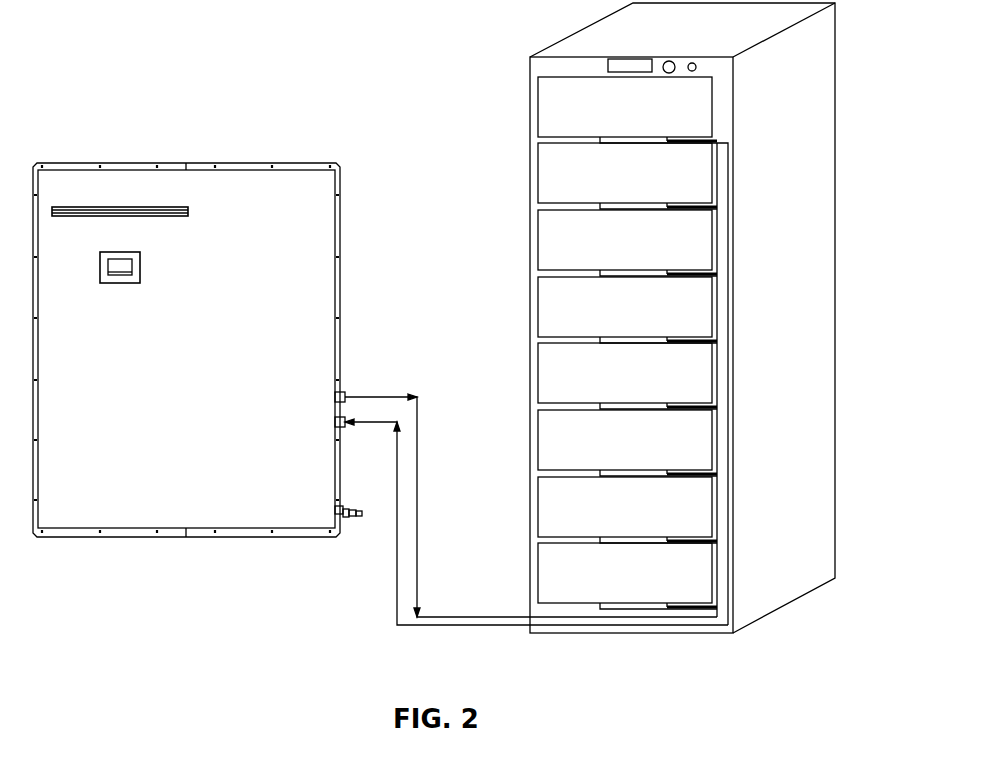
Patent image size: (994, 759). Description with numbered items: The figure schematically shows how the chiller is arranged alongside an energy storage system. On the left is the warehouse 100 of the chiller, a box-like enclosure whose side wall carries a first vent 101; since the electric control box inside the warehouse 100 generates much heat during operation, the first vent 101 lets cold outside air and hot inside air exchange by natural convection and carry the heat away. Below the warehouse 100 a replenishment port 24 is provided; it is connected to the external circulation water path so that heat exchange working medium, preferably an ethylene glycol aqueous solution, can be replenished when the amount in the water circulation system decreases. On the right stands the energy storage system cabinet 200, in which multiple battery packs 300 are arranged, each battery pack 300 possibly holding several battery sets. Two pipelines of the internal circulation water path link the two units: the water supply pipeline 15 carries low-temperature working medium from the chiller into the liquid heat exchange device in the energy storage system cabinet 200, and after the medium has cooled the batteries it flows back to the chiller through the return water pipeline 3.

The warehouse 100 is at (248, 173).
The first vent 101 is at (133, 205).
The energy storage system cabinet 200 is at (581, 46).
The battery pack 300 is at (550, 120).
The water supply pipeline 15 is at (417, 513).
The replenishment port 24 is at (351, 519).
The return water pipeline 3 is at (397, 602).